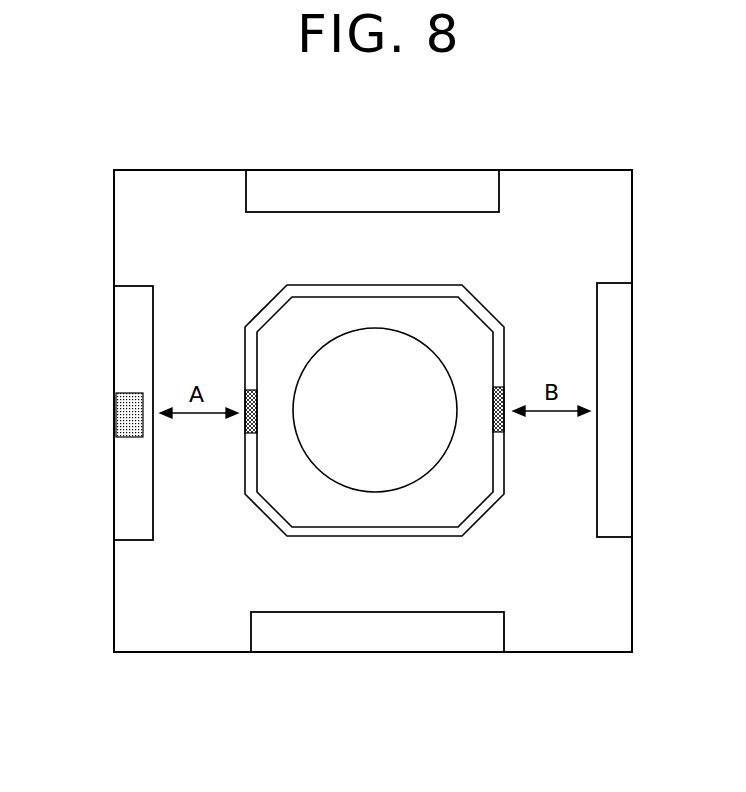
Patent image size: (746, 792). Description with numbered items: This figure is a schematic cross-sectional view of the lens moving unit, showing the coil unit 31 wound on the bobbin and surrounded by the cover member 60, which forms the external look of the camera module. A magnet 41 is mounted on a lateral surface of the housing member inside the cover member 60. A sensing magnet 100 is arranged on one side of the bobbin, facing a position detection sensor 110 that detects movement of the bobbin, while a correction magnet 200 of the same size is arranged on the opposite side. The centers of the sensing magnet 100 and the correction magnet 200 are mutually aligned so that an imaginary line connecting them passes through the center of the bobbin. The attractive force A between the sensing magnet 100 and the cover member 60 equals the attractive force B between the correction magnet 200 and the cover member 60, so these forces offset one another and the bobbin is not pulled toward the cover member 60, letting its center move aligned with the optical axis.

The cover member 60 is at (593, 170).
The magnet 41 is at (613, 370).
The coil unit 31 is at (393, 534).
The position detection sensor 110 is at (126, 410).
The sensing magnet 100 is at (244, 421).
The correction magnet 200 is at (504, 425).